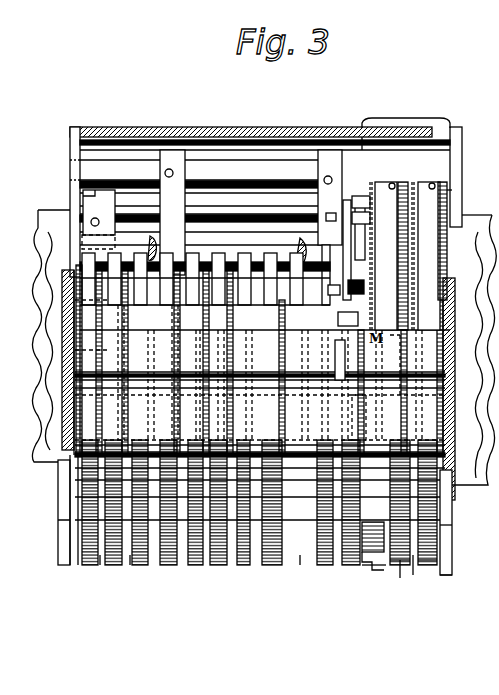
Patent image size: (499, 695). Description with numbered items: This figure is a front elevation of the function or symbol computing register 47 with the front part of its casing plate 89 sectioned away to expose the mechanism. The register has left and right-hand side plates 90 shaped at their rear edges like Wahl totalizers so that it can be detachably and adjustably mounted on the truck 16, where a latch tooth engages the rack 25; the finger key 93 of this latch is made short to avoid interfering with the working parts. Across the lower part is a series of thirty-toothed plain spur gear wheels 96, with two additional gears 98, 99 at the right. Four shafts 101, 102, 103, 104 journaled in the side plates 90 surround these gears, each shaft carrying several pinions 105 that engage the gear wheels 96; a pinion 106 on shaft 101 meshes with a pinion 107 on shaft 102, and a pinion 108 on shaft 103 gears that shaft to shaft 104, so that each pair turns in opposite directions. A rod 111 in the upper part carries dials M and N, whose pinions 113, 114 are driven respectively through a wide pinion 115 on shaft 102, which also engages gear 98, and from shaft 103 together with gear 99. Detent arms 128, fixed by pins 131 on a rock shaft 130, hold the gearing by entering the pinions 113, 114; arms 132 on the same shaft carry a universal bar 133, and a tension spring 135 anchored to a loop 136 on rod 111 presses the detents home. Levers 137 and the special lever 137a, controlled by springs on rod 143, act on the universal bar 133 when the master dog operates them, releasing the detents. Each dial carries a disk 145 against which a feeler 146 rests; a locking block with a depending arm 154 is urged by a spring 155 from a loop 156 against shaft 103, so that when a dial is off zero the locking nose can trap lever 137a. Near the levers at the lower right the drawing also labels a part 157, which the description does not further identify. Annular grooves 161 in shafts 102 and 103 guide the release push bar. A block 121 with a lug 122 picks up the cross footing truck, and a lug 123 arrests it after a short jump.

The truck 16 is at (38, 222).
The rack 25 is at (48, 293).
The function or symbol computing register 47 is at (60, 202).
The casing plate 89 is at (112, 121).
The side plates 90 is at (60, 505).
The finger key 93 is at (402, 124).
The gear wheels 96 is at (160, 556).
The gear 98 is at (400, 566).
The gear 99 is at (426, 566).
The shaft 101 is at (72, 411).
The shaft 102 is at (310, 353).
The shaft 103 is at (265, 319).
The shaft 104 is at (302, 398).
The pinions 105 is at (95, 316).
The pinion 106 is at (75, 384).
The pinion 107 is at (75, 348).
The pinion 108 is at (74, 300).
The shaft or rod 111 is at (303, 260).
The pinion 113 is at (402, 183).
The pinion 114 is at (452, 194).
The pinion 115 is at (398, 342).
The block 121 is at (382, 538).
The lug 122 is at (376, 568).
The lug 123 is at (446, 576).
The arms 128 is at (362, 137).
The rock shaft 130 is at (205, 174).
The pins 131 is at (388, 184).
The arms 132 is at (178, 200).
The universal bar 133 is at (214, 262).
The tension spring 135 is at (333, 221).
The loop 136 is at (345, 246).
The levers 137 is at (100, 556).
The special lever 137a is at (415, 575).
The rod 143 is at (260, 508).
The disk 145 is at (357, 202).
The feeler 146 is at (357, 219).
The depending arm 154 is at (369, 415).
The spring 155 is at (340, 320).
The loop 156 is at (330, 288).
The gear 157 is at (405, 568).
The annular grooves 161 is at (345, 350).